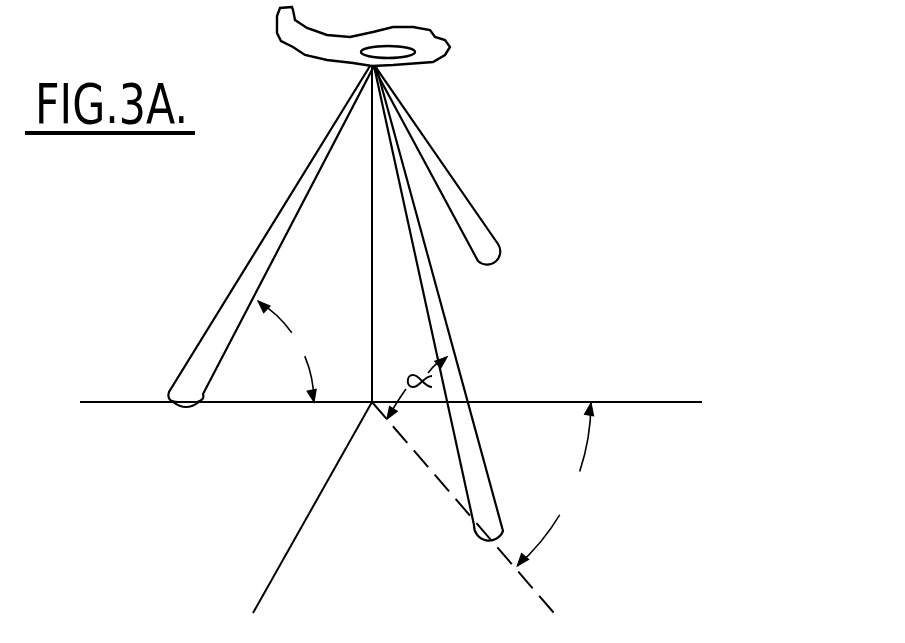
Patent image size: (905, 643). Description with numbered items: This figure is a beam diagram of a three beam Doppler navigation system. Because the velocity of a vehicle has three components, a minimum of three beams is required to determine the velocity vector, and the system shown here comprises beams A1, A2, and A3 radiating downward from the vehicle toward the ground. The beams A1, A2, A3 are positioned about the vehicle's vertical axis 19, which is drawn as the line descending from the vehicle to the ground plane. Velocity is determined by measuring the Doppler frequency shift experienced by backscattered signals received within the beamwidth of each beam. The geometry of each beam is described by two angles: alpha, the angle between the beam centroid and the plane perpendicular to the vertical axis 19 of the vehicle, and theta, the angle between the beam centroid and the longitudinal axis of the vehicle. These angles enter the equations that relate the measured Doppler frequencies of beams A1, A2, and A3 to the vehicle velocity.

The beam A1 is at (250, 258).
The beam A2 is at (477, 217).
The beam A3 is at (463, 380).
The vertical axis 19 is at (371, 288).